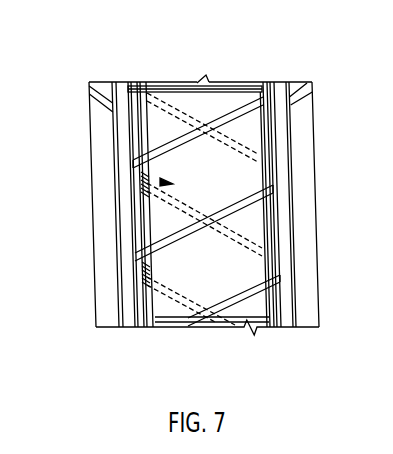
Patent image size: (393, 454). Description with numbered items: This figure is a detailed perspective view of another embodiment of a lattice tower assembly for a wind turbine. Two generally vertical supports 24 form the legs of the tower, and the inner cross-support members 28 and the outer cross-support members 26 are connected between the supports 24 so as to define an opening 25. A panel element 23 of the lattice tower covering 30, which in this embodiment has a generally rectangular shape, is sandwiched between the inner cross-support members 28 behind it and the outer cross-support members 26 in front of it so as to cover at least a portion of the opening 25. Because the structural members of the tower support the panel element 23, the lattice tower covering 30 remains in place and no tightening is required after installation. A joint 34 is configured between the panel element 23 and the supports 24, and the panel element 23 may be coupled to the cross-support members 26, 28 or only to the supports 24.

The panel element 23 is at (228, 85).
The support 24 is at (107, 213).
The opening 25 is at (187, 277).
The outer cross-support member 26 is at (178, 140).
The inner cross-support member 28 is at (243, 148).
The lattice tower covering 30 is at (162, 181).
The joint 34 is at (146, 229).